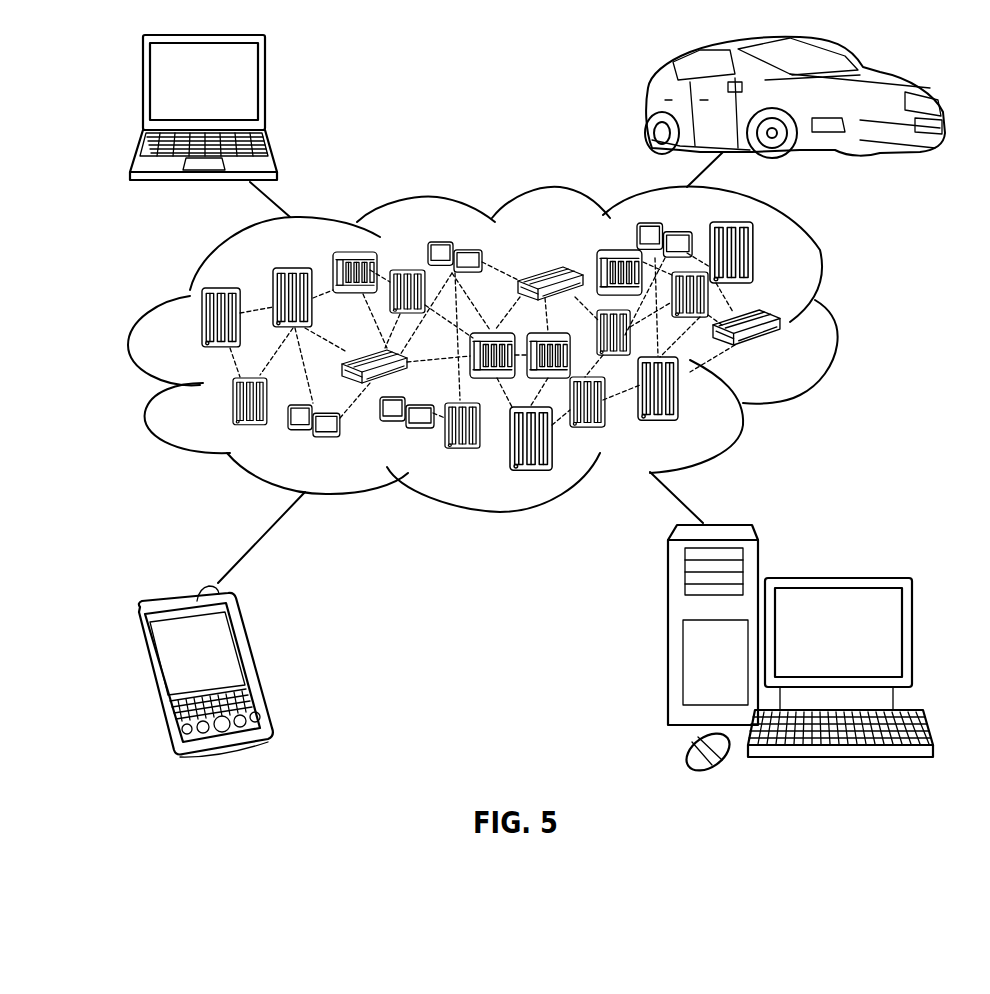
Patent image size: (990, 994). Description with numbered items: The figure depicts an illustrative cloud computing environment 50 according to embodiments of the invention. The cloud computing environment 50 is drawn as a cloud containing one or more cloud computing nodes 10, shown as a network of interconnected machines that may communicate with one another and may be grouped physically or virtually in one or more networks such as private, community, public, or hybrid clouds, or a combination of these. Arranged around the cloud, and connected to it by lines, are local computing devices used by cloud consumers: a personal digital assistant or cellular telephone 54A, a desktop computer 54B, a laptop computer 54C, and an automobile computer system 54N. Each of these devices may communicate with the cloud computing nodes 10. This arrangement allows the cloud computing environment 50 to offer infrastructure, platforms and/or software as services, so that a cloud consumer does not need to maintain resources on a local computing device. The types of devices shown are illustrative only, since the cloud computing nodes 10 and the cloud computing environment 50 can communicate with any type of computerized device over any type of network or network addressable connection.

The cloud computing environment 50 is at (838, 326).
The cloud computing nodes 10 is at (783, 351).
The personal digital assistant or cellular telephone 54A is at (255, 658).
The desktop computer 54B is at (838, 578).
The laptop computer 54C is at (265, 92).
The automobile computer system 54N is at (648, 105).